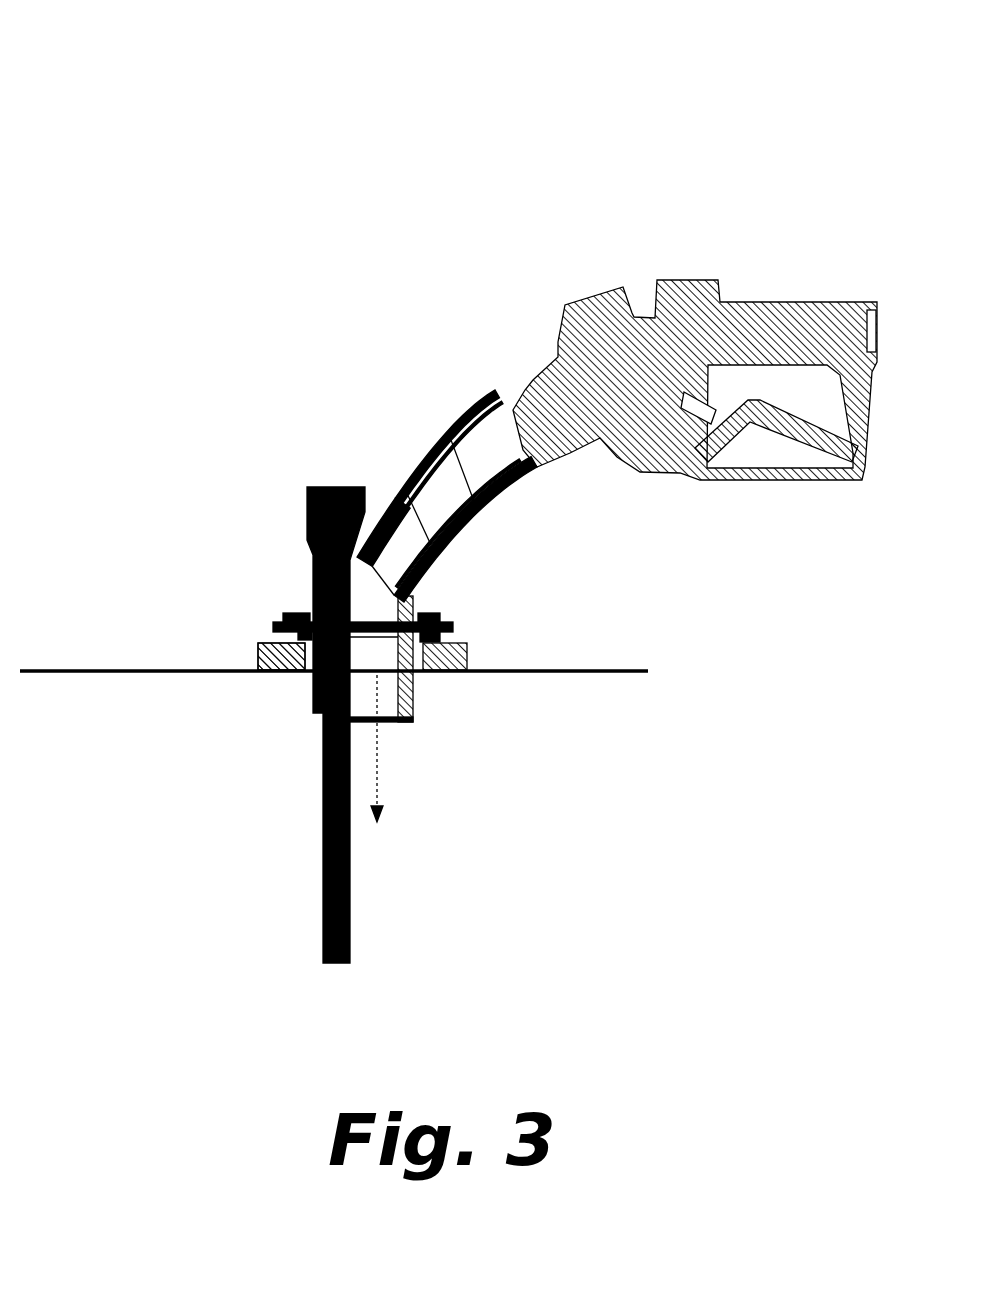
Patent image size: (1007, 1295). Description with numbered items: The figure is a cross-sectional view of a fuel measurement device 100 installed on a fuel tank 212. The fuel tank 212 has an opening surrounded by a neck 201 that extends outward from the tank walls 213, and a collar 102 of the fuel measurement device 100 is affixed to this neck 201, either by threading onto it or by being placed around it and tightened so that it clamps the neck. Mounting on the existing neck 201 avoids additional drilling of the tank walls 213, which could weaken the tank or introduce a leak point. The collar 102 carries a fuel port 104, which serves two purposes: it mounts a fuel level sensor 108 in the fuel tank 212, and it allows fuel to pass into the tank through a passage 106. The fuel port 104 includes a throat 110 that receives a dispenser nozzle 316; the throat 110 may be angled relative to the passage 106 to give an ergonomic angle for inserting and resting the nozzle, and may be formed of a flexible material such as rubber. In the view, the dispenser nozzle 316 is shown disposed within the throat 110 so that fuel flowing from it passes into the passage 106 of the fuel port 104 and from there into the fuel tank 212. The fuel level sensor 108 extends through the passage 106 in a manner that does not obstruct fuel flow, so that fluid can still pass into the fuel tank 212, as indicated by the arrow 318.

The fuel measurement device 100 is at (178, 78).
The collar 102 is at (462, 670).
The fuel port 104 is at (447, 632).
The passage 106 is at (383, 675).
The fuel level sensor 108 is at (322, 815).
The throat 110 is at (465, 508).
The neck 201 is at (312, 670).
The fuel tank 212 is at (158, 655).
The tank walls 213 is at (70, 670).
The dispenser nozzle 316 is at (602, 323).
The arrow 318 is at (380, 772).